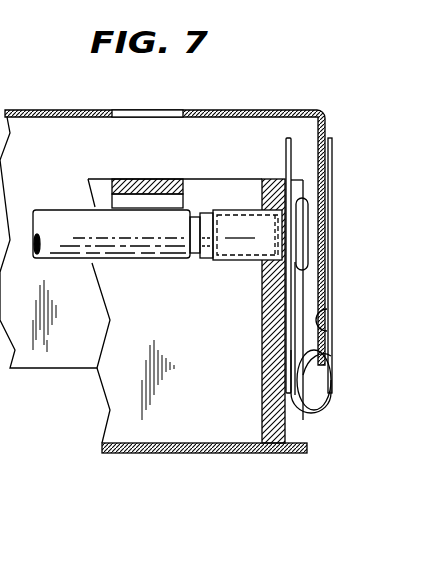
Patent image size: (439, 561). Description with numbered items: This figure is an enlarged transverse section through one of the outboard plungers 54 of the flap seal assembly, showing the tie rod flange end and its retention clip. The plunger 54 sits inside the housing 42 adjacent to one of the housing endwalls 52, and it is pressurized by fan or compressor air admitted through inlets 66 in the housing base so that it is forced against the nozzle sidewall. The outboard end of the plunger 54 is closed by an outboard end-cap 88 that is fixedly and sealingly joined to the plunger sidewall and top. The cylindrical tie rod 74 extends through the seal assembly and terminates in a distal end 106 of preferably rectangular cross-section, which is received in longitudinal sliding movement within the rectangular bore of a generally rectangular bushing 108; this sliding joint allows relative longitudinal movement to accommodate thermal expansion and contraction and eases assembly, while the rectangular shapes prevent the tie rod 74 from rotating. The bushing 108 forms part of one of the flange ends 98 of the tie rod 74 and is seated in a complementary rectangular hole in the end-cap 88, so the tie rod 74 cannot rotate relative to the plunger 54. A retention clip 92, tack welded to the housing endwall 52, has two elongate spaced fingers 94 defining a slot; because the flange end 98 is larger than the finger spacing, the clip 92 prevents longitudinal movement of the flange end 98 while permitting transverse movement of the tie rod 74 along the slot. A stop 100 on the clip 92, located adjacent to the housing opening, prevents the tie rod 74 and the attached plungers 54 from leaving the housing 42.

The housing 42 is at (87, 107).
The inlets 66 is at (143, 110).
The fingers 94 is at (285, 150).
The bushing 108 is at (217, 180).
The tie rod 74 is at (115, 265).
The distal end 106 is at (203, 255).
The flange ends 98 is at (308, 228).
The retention clip 92 is at (338, 291).
The endwalls 52 is at (327, 331).
The outboard end-cap 88 is at (262, 351).
The stop 100 is at (334, 393).
The plungers 54 is at (169, 457).